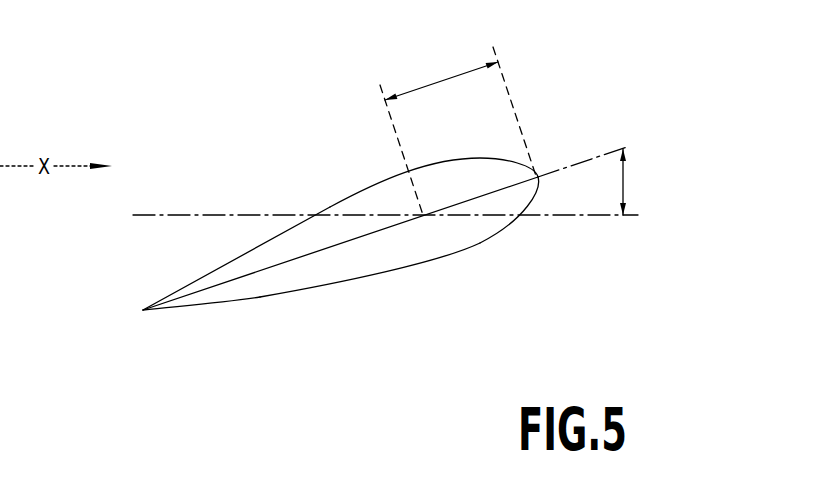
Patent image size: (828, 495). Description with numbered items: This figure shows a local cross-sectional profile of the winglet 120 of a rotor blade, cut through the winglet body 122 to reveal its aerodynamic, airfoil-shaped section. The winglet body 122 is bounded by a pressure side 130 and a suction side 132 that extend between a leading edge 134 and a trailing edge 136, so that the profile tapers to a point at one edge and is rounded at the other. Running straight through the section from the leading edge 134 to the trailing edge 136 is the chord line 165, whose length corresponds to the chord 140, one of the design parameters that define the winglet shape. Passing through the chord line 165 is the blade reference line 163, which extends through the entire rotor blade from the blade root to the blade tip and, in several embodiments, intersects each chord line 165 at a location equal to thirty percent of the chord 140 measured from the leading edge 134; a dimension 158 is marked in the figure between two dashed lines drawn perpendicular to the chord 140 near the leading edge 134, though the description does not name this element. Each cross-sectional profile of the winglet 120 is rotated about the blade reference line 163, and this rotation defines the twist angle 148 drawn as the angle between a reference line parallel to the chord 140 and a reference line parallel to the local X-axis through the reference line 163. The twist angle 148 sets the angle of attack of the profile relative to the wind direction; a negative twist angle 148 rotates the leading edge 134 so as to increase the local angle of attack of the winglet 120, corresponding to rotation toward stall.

The winglet 120 is at (190, 112).
The winglet body 122 is at (227, 255).
The pressure side 130 is at (373, 185).
The suction side 132 is at (376, 276).
The leading edge 134 is at (537, 178).
The trailing edge 136 is at (143, 310).
The chord 140 is at (385, 277).
The chord line 165 is at (258, 270).
The twist angle 148 is at (623, 186).
The airfoil thickness 158 is at (441, 81).
The blade reference line 163 is at (423, 215).